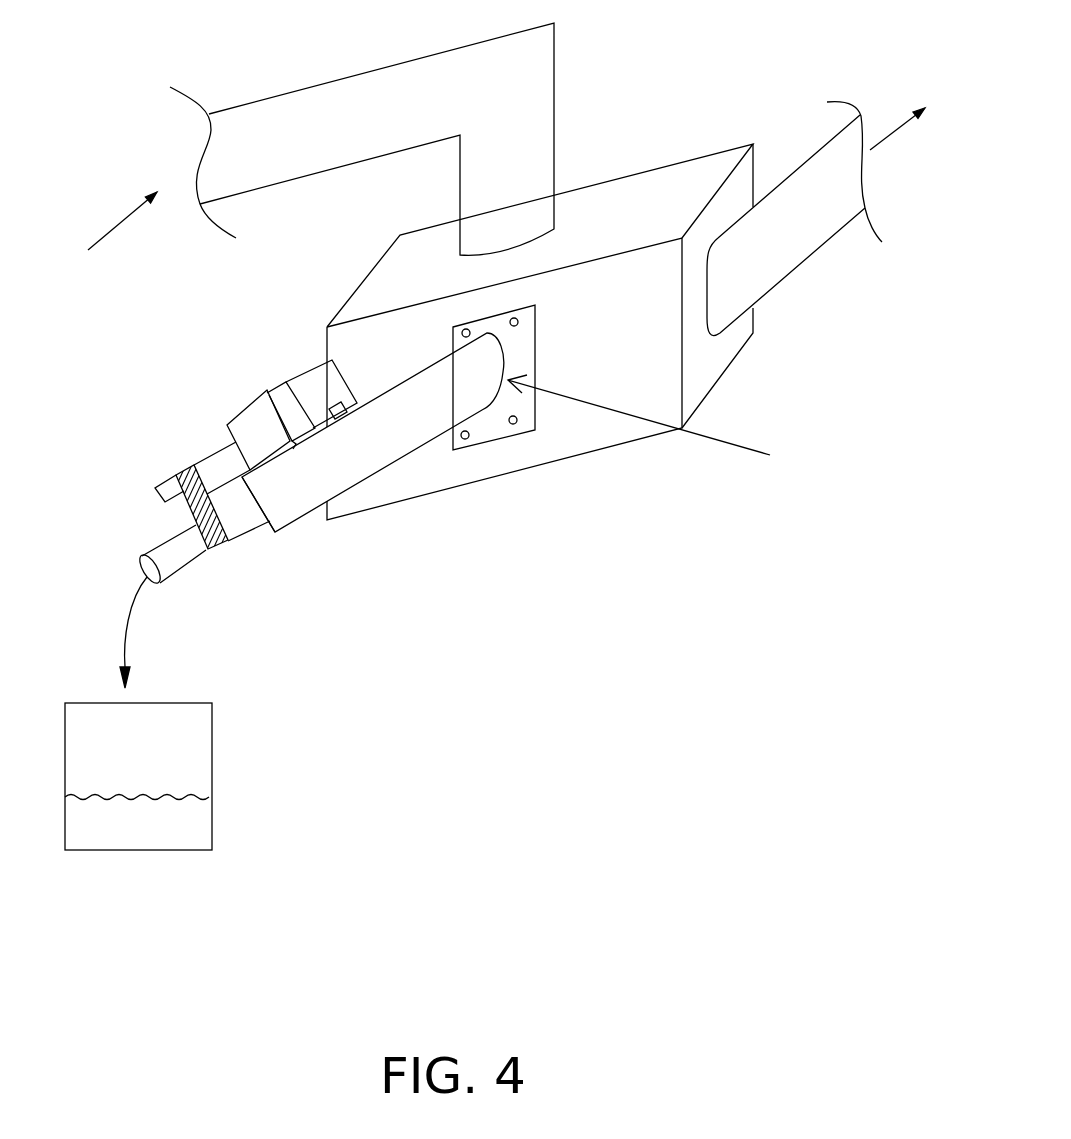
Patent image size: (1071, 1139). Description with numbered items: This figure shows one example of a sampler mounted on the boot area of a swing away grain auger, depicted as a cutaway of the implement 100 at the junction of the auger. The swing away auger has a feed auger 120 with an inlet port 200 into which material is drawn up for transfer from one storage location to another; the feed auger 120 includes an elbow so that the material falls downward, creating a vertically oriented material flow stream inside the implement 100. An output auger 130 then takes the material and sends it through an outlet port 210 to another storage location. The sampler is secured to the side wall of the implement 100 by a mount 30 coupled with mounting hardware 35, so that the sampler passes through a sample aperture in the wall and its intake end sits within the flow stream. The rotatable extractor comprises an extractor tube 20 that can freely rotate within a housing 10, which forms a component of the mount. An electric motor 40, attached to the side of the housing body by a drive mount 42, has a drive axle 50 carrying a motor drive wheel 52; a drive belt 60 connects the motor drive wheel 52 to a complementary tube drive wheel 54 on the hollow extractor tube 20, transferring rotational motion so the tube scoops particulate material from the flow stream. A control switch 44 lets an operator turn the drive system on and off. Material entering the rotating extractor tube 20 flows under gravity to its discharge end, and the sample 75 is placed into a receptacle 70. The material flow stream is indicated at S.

The housing 10 is at (303, 518).
The extractor tube 20 is at (183, 570).
The mount 30 is at (467, 450).
The mounting hardware 35 is at (522, 422).
The electric motor 40 is at (243, 405).
The drive mount 42 is at (270, 380).
The control switch 44 is at (332, 404).
The drive axle 50 is at (210, 455).
The motor drive wheel 52 is at (177, 477).
The tube drive wheel 54 is at (233, 547).
The drive belt 60 is at (187, 508).
The receptacle 70 is at (213, 810).
The sample 75 is at (133, 835).
The implement 100 is at (527, 455).
The feed auger 120 is at (342, 102).
The output auger 130 is at (798, 267).
The inlet port 200 is at (96, 243).
The outlet port 210 is at (904, 103).
The substrate S is at (653, 424).